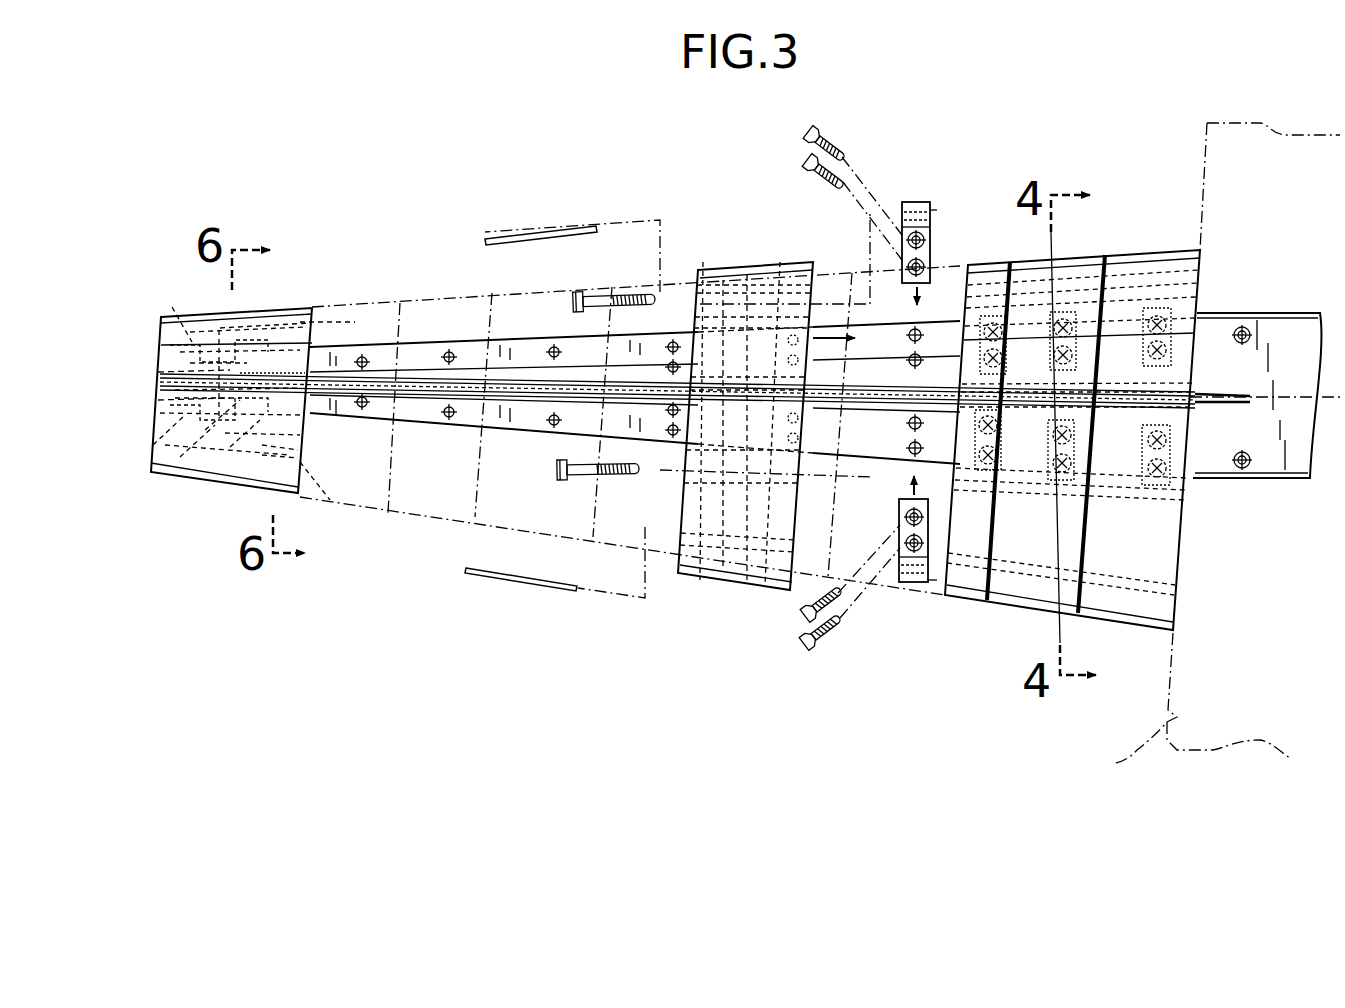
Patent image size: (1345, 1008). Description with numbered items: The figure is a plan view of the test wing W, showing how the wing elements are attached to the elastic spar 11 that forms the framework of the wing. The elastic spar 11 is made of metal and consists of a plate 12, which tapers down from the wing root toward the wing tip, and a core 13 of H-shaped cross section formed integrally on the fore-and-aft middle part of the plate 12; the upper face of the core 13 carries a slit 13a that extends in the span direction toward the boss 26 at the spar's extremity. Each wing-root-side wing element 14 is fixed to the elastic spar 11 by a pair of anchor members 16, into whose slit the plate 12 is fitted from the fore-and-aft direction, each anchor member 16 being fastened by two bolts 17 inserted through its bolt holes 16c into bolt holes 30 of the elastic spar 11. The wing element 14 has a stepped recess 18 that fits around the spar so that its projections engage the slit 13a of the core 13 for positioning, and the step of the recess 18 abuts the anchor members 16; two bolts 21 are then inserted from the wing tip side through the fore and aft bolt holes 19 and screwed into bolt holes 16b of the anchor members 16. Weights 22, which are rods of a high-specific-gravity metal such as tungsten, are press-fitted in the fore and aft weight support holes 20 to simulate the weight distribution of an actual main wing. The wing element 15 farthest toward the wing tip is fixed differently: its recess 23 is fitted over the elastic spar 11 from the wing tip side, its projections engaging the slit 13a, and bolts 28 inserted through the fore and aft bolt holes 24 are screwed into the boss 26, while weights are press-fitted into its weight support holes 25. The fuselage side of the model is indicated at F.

The elastic spar 11 is at (447, 428).
The plate 12 is at (530, 413).
The core 13 is at (518, 374).
The slit 13a is at (385, 382).
The wing element 14 is at (744, 258).
The wing element 15 is at (290, 305).
The anchor member 16 is at (914, 196).
The bolt hole 16b is at (936, 210).
The bolt hole 16c is at (906, 265).
The bolt 17 is at (805, 157).
The stepped recess 18 is at (774, 389).
The bolt hole 19 is at (703, 262).
The weight support hole 20 is at (779, 262).
The bolt 21 is at (602, 297).
The weight 22 is at (556, 226).
The recess 23 is at (230, 448).
The bolt hole 24 is at (158, 378).
The weight support hole 25 is at (320, 322).
The boss 26 is at (182, 452).
The bolt 28 is at (190, 340).
The bolt hole 30 is at (907, 336).
The test wing W is at (705, 632).
The fuselage F is at (1217, 449).